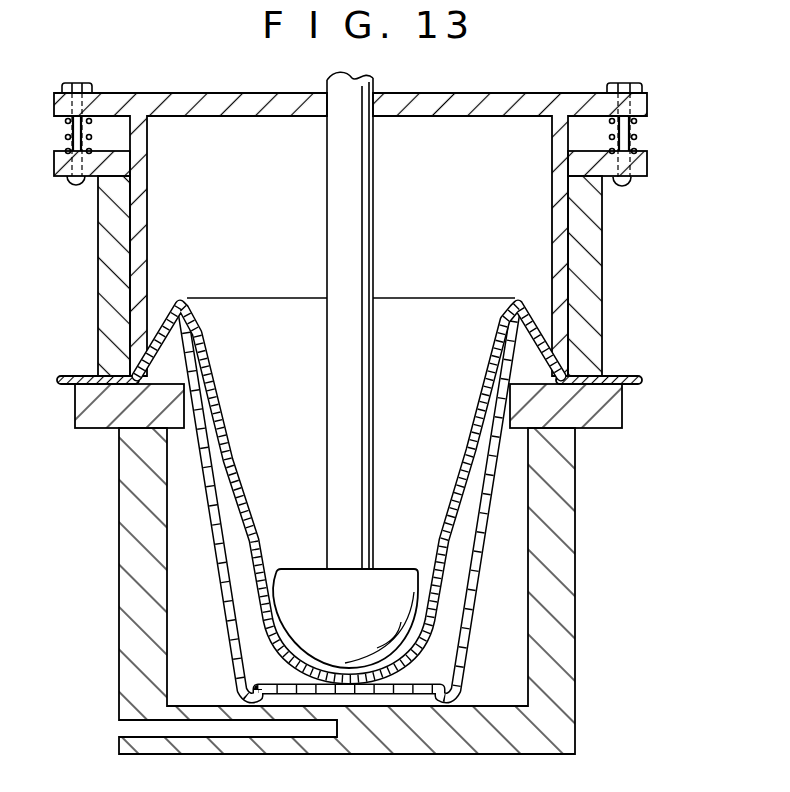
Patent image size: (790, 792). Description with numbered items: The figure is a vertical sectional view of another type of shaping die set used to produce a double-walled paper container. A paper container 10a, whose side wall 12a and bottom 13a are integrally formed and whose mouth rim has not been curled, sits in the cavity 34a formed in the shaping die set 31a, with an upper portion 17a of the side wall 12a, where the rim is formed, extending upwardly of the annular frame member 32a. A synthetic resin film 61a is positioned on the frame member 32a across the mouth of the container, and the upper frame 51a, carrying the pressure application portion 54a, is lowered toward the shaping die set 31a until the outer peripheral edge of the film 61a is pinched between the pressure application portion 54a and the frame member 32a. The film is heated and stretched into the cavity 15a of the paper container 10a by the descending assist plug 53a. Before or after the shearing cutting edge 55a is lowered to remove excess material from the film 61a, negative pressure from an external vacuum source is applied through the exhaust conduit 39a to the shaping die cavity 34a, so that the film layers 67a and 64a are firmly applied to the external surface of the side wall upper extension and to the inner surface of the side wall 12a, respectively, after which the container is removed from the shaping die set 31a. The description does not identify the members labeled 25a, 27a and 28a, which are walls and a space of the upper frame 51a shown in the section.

The paper container 10a is at (349, 501).
The side wall 12a is at (232, 573).
The bottom 13a is at (332, 505).
The cavity 15a is at (454, 656).
The upper portion 17a is at (190, 367).
The inner cylinder wall 25a is at (140, 313).
The upper chamber 27a is at (466, 203).
The liner 28a is at (212, 370).
The shaping die set 31a is at (374, 569).
The annular frame member 32a is at (605, 410).
The cavity 34a is at (219, 651).
The exhaust conduit 39a is at (133, 728).
The upper frame 51a is at (361, 233).
The assist plug 53a is at (398, 567).
The pressure application portion 54a is at (585, 277).
The shearing cutting edge 55a is at (563, 240).
The synthetic resin film 61a is at (73, 375).
The film layer 64a is at (493, 370).
The film layer 67a is at (541, 344).